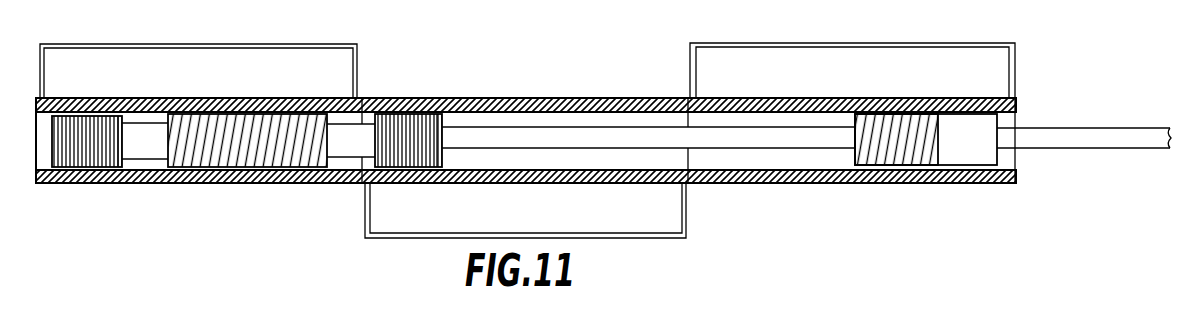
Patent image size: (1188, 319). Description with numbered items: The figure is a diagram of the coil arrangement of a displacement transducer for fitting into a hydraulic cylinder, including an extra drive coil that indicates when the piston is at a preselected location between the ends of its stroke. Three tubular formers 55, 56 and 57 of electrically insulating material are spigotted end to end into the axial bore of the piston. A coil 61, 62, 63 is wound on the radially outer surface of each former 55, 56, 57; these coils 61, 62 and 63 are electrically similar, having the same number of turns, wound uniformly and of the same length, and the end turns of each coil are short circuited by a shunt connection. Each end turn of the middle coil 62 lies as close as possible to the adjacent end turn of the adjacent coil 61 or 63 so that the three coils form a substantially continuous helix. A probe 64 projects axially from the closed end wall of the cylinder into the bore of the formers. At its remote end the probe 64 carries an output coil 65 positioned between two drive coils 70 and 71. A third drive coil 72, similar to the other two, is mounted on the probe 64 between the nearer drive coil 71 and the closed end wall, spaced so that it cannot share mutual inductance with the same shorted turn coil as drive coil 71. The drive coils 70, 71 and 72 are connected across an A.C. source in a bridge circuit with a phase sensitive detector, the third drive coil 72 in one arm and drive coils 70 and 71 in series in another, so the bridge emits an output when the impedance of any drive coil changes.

The tubular former 55 is at (165, 178).
The tubular former 56 is at (513, 98).
The tubular former 57 is at (812, 176).
The coil 61 is at (331, 100).
The middle coil 62 is at (671, 100).
The coil 63 is at (743, 100).
The probe 64 is at (1085, 138).
The output coil 65 is at (250, 143).
The drive coil 70 is at (80, 148).
The drive coil 71 is at (410, 145).
The third drive coil 72 is at (893, 143).